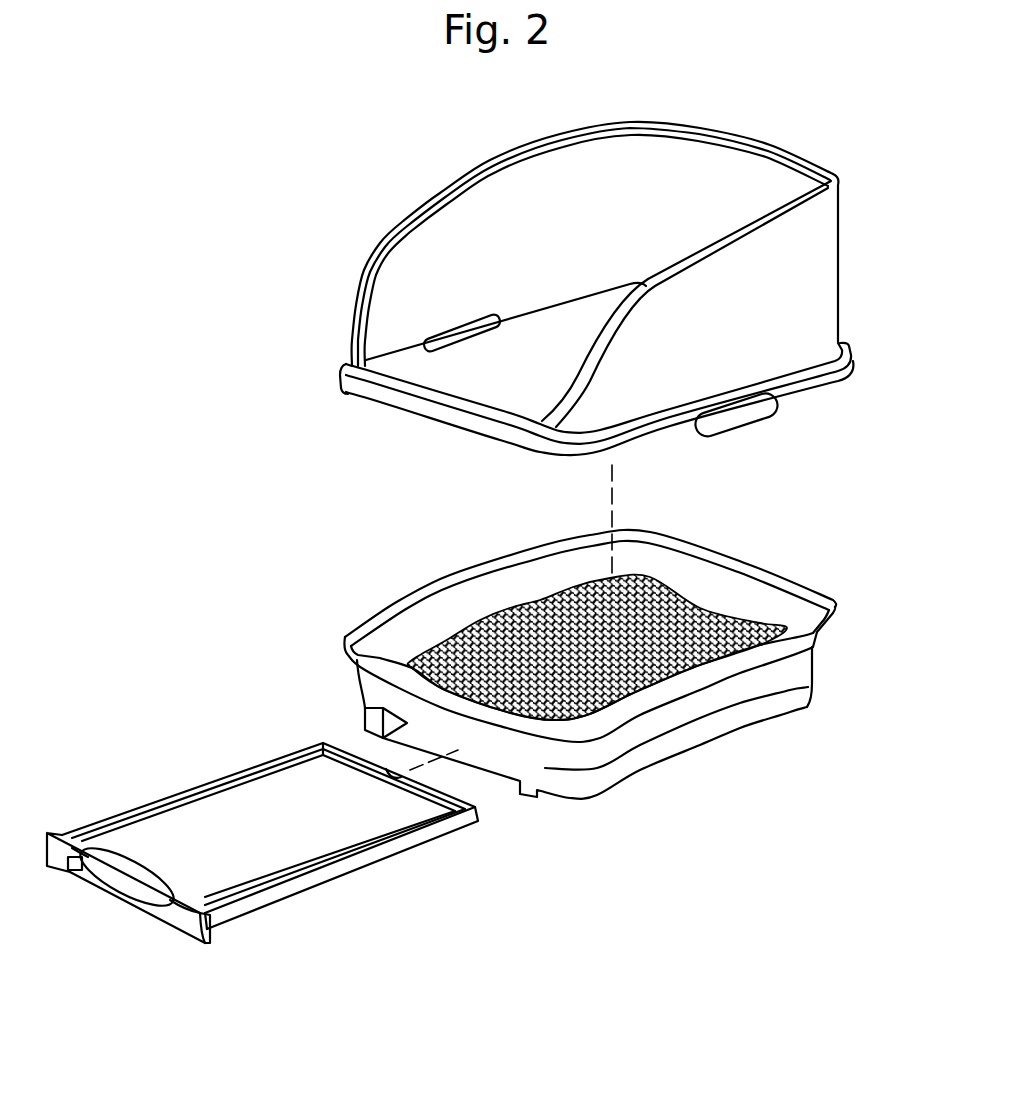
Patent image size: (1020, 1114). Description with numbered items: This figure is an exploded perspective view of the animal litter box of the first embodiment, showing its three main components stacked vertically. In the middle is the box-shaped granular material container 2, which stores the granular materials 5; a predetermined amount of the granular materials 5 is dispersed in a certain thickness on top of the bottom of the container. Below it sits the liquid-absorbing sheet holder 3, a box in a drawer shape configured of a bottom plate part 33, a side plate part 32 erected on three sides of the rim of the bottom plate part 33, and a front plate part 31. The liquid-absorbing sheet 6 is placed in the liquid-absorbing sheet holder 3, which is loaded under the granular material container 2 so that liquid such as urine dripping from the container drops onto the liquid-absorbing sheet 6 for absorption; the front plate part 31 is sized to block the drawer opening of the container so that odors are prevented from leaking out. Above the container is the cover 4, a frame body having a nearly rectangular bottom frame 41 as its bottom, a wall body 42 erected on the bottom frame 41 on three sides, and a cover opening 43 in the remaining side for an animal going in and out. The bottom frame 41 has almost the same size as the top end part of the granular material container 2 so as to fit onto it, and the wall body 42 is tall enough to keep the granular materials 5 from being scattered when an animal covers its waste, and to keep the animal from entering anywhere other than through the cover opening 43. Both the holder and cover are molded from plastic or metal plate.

The granular material container 2 is at (620, 658).
The liquid-absorbing sheet holder 3 is at (262, 847).
The cover 4 is at (598, 304).
The granular materials 5 is at (707, 610).
The liquid-absorbing sheet 6 is at (238, 802).
The front plate part 31 is at (175, 915).
The side plate part 32 is at (300, 885).
The bottom plate part 33 is at (352, 878).
The bottom frame 41 is at (453, 414).
The wall body 42 is at (780, 323).
The cover opening 43 is at (420, 260).